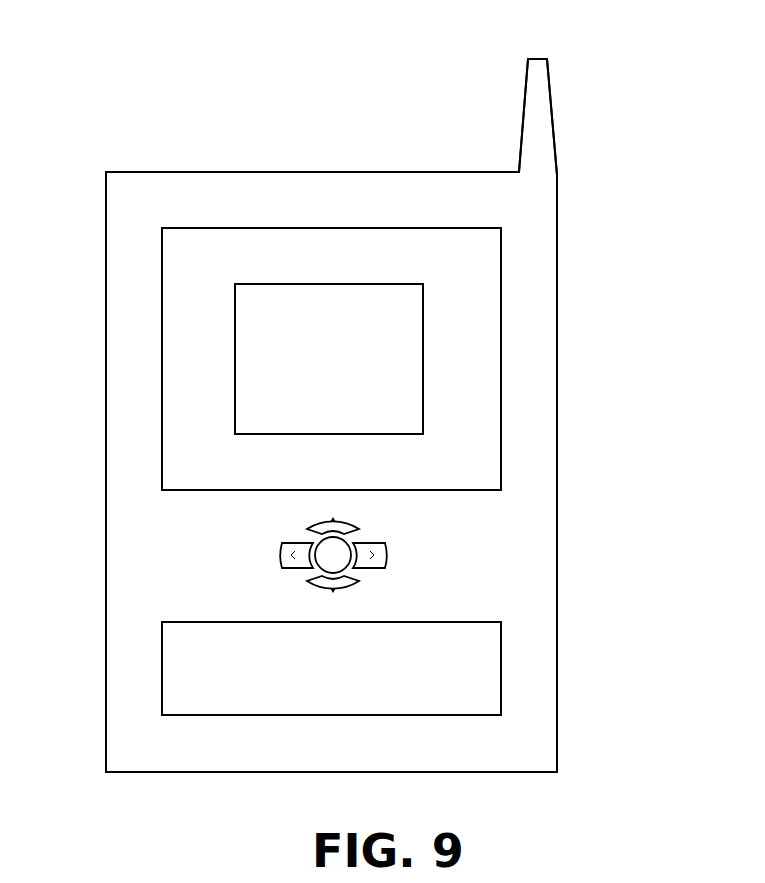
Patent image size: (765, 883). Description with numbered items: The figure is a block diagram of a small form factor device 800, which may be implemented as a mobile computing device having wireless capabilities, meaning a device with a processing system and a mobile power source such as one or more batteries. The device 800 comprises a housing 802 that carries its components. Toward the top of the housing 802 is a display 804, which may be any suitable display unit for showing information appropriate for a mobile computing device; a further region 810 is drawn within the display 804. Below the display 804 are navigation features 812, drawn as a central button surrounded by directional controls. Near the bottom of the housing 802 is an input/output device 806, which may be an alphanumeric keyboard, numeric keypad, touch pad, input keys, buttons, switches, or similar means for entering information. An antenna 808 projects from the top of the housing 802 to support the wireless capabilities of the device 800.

The small form factor device 800 is at (125, 79).
The housing 802 is at (557, 471).
The display 804 is at (501, 246).
The input/output (I/O) device 806 is at (501, 659).
The antenna 808 is at (524, 108).
The display window / image region 810 is at (423, 377).
The navigation features 812 is at (403, 545).